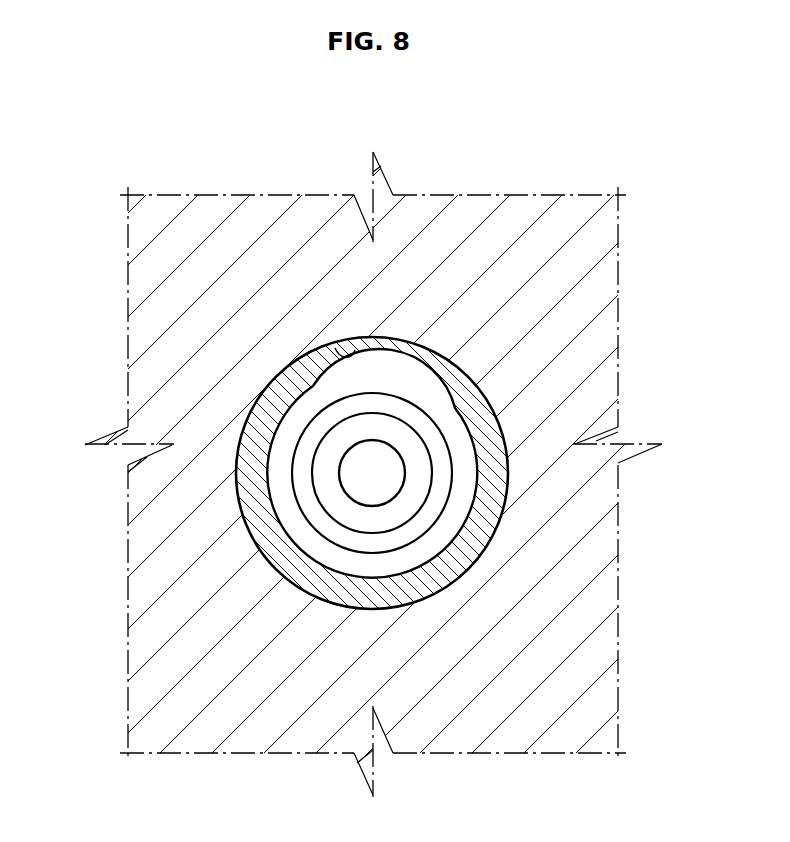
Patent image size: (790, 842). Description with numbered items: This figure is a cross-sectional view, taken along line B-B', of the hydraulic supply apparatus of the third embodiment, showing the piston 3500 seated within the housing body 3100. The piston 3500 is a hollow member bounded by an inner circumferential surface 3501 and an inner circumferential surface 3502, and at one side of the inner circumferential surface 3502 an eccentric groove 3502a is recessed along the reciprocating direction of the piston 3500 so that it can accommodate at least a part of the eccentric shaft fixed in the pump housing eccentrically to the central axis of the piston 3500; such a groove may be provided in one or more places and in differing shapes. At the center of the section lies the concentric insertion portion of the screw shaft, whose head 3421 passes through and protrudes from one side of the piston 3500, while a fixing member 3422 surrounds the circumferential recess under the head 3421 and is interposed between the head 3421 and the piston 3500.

The housing body 3100 is at (578, 668).
The piston 3500 is at (395, 492).
The inner circumferential surface 3501 is at (441, 408).
The inner circumferential surface 3502 is at (470, 478).
The eccentric groove 3502a is at (335, 348).
The head 3421 is at (338, 508).
The fixing member 3422 is at (302, 489).